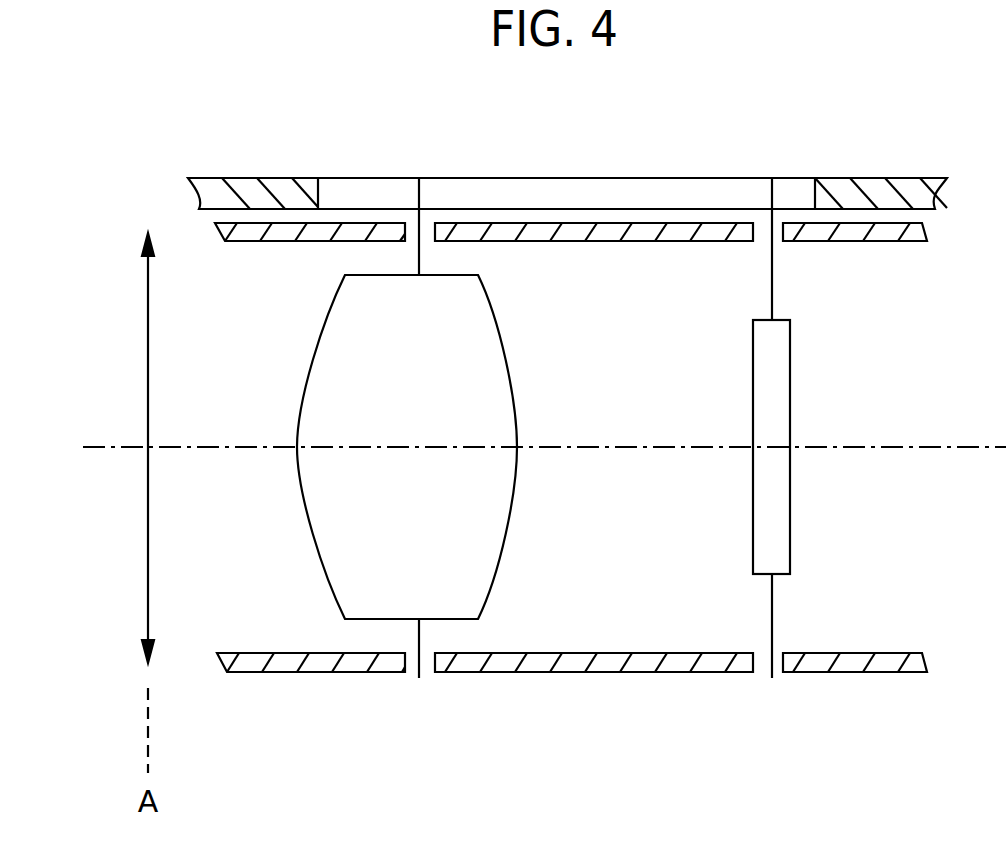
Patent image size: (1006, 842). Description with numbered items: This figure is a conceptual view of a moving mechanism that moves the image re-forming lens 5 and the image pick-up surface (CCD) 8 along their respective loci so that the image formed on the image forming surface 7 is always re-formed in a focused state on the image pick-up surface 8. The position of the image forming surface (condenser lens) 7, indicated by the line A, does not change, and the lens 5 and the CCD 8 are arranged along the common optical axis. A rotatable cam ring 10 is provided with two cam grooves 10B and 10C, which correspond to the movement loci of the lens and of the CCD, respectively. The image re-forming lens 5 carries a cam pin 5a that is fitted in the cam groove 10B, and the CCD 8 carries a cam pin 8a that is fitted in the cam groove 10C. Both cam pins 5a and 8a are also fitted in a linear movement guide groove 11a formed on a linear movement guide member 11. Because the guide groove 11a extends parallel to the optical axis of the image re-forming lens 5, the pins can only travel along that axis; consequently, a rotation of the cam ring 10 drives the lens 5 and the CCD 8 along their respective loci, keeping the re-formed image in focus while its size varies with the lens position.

The linear movement guide member 11 is at (277, 190).
The linear movement guide groove 11a is at (545, 196).
The cam ring 10 is at (623, 233).
The cam groove 10B is at (463, 672).
The cam groove 10C is at (797, 672).
The image re-forming lens 5 is at (500, 393).
The cam pin 5a is at (420, 215).
The image pick-up surface (CCD) 8 is at (773, 405).
The cam pin 8a is at (773, 215).
The image forming surface (condenser lens) 7 is at (147, 357).